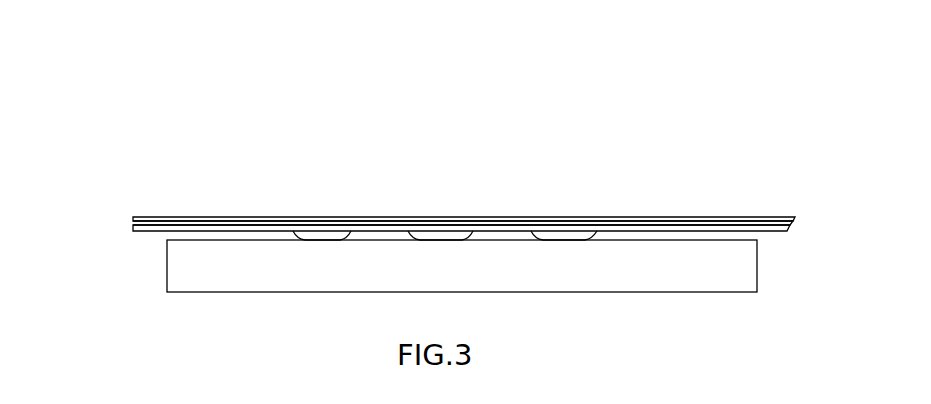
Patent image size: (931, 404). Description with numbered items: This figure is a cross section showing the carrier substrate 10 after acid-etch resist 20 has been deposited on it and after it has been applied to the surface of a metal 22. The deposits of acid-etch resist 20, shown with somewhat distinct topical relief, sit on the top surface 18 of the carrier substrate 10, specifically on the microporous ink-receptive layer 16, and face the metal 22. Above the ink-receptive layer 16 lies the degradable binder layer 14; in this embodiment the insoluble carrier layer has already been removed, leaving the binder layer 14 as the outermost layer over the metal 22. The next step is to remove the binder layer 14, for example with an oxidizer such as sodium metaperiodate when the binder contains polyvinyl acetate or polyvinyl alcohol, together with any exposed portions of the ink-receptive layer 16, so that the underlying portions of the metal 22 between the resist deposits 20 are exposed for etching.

The carrier substrate 10 is at (780, 104).
The degradable binder layer 14 is at (348, 217).
The microporous ink-receptive layer 16 is at (660, 227).
The top surface 18 is at (145, 234).
The acid-etch resist 20 is at (300, 236).
The metal 22 is at (740, 282).